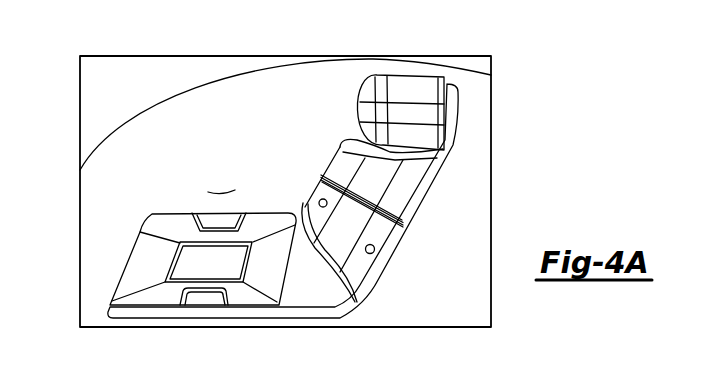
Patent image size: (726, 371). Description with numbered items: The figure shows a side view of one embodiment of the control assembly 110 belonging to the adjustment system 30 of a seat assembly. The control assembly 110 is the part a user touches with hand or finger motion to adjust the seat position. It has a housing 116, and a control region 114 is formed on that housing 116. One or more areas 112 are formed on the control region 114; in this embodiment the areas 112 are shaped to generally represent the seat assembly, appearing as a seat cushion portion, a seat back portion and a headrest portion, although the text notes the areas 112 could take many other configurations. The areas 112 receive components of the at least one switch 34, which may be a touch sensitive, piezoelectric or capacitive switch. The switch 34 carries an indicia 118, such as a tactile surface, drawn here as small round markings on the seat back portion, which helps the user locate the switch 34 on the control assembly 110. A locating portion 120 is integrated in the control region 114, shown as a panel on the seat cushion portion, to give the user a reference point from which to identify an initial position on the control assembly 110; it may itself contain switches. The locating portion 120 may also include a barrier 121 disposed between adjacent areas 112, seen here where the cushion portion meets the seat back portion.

The adjustment system 30 is at (72, 117).
The control assembly 110 is at (339, 57).
The housing 116 is at (177, 110).
The switch 34 is at (326, 205).
The areas 112 is at (194, 237).
The control region 114 is at (222, 189).
The indicia 118 is at (319, 202).
The locating portion 120 is at (202, 262).
The barrier 121 is at (322, 258).